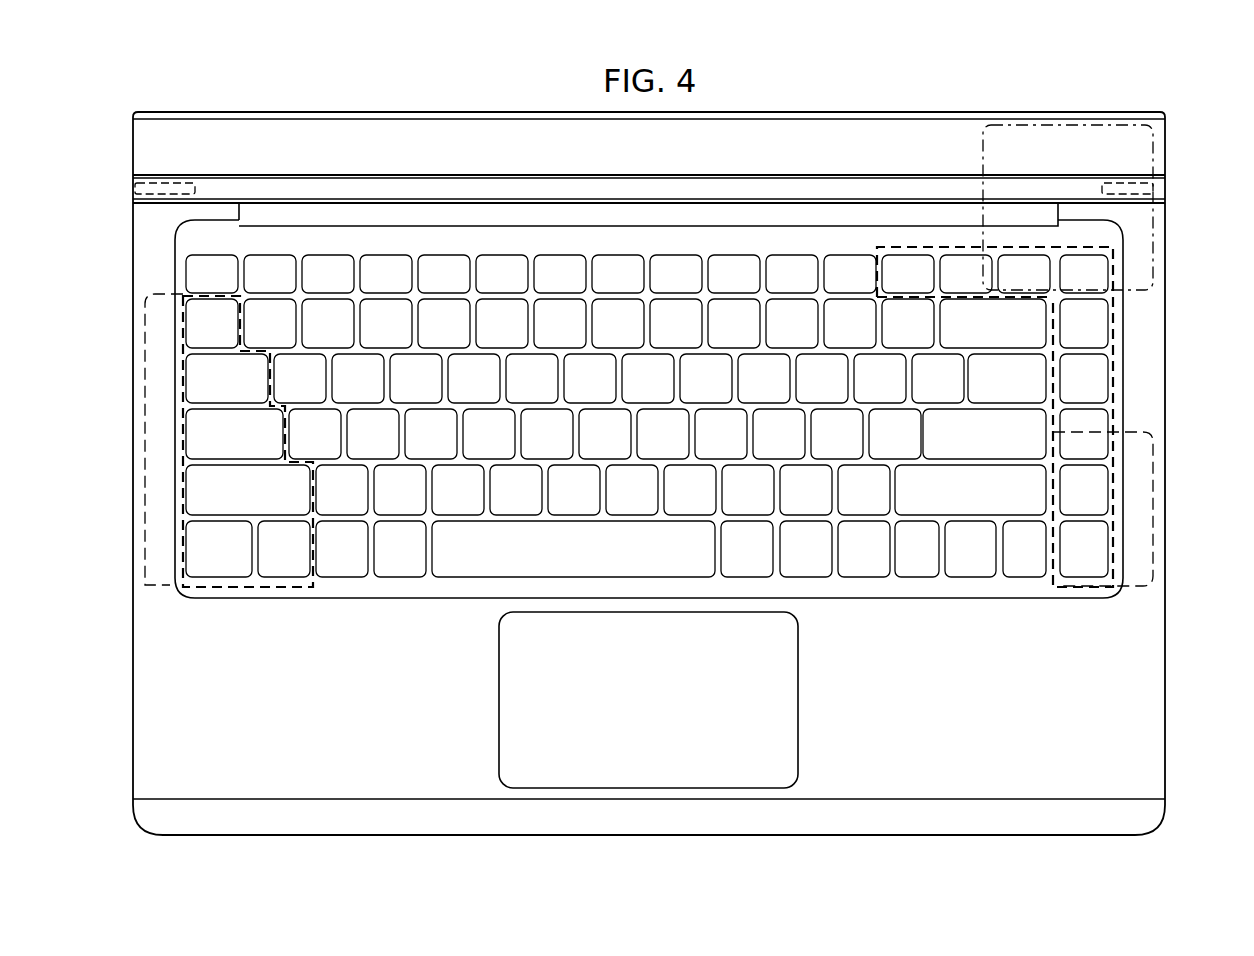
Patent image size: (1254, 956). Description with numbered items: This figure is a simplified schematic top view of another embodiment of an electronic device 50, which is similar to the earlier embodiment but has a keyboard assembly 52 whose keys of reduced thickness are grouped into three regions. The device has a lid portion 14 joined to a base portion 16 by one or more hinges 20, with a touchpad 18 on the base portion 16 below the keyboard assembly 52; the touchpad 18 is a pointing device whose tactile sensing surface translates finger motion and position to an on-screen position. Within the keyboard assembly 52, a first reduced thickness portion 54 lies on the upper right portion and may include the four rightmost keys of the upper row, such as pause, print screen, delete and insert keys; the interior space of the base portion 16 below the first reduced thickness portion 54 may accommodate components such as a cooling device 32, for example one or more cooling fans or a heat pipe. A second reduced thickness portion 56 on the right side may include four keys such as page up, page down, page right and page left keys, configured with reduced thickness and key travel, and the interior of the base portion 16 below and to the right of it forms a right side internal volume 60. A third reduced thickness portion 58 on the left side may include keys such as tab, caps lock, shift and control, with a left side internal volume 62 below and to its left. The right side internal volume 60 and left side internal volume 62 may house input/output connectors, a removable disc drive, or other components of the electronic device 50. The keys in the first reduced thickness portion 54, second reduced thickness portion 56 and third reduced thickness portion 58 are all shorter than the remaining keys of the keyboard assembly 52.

The lid portion 14 is at (477, 175).
The base portion 16 is at (133, 683).
The touchpad 18 is at (664, 714).
The hinges 20 is at (133, 189).
The cooling device 32 is at (1165, 156).
The electronic device 50 is at (317, 96).
The keyboard assembly 52 is at (412, 593).
The first reduced thickness portion 54 is at (1125, 343).
The second reduced thickness portion 56 is at (1085, 598).
The third reduced thickness portion 58 is at (212, 596).
The right side internal volume 60 is at (1152, 536).
The left side internal volume 62 is at (160, 595).